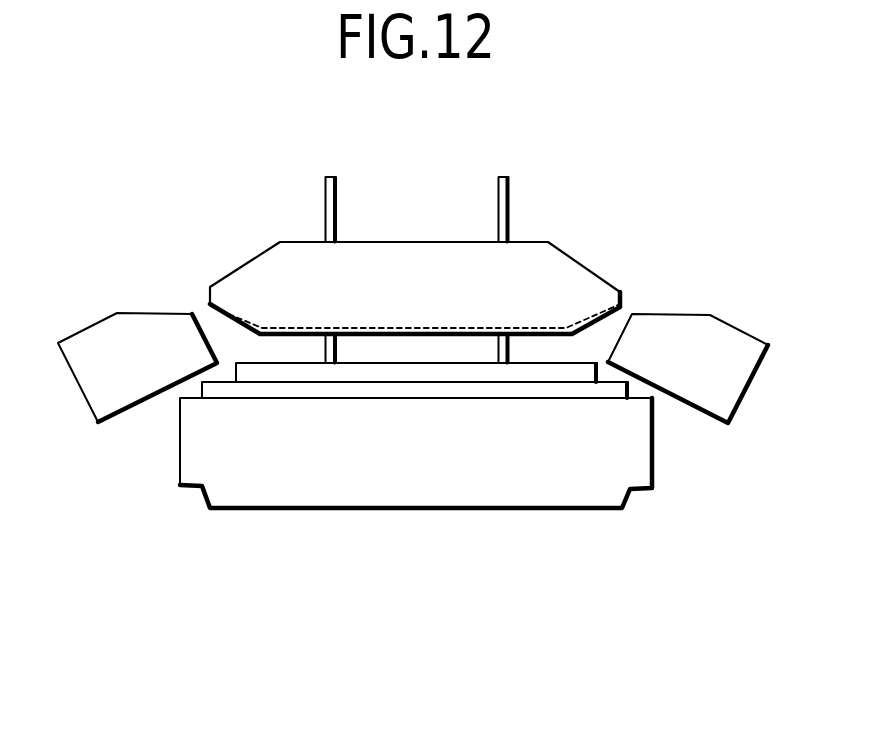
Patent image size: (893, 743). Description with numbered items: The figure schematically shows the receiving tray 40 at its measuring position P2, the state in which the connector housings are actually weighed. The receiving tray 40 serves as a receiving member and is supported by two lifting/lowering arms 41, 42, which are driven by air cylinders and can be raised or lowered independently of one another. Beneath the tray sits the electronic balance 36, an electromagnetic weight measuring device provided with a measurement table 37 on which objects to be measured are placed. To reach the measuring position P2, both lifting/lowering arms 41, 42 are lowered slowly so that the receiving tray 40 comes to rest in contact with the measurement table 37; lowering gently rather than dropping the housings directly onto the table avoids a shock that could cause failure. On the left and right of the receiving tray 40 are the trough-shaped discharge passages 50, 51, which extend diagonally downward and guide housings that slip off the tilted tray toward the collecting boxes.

The measuring position P2 is at (221, 255).
The receiving tray 40 is at (408, 267).
The lifting/lowering arm 41 is at (328, 344).
The lifting/lowering arm 42 is at (508, 343).
The measurement table 37 is at (389, 363).
The electronic balance 36 is at (632, 457).
The discharge passage 50 is at (95, 343).
The discharge passage 51 is at (728, 343).